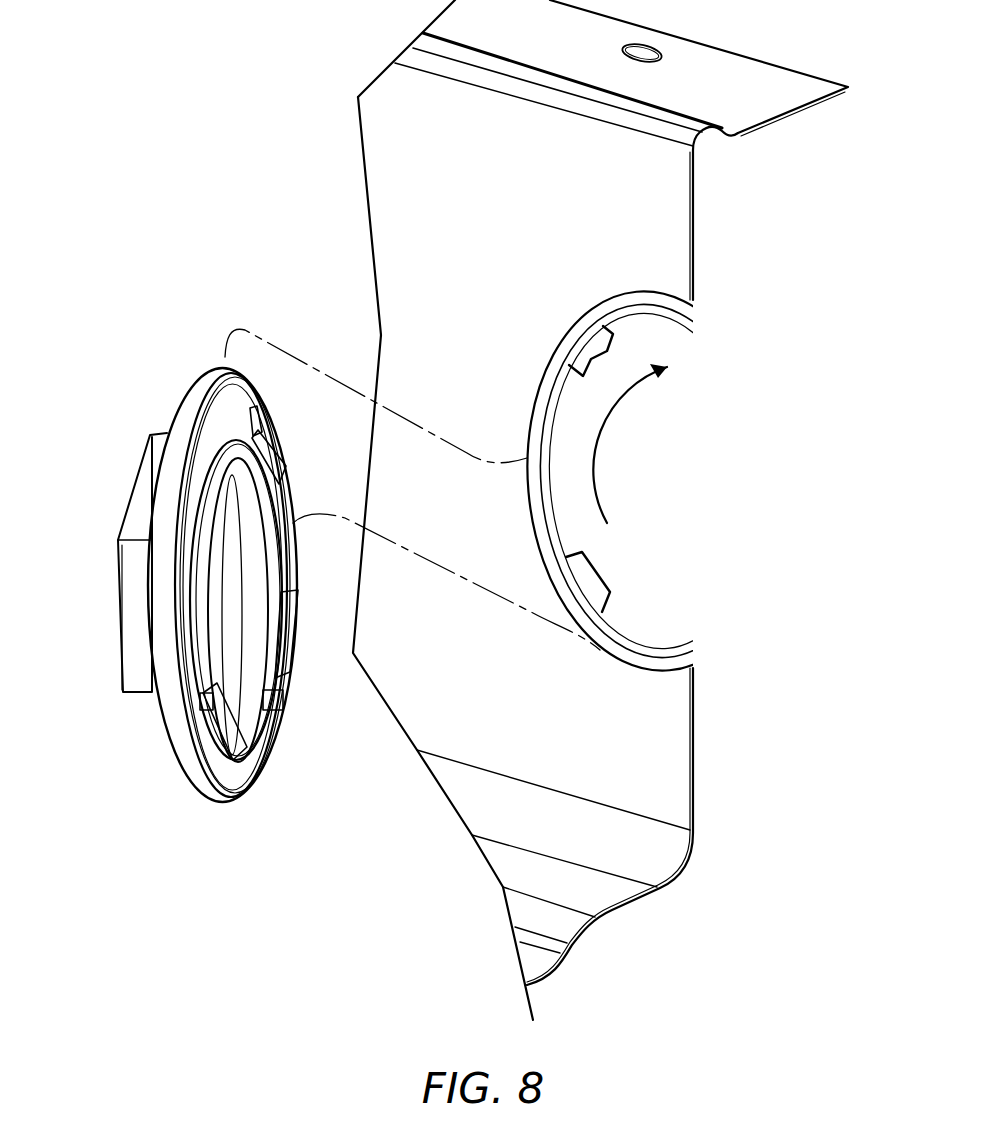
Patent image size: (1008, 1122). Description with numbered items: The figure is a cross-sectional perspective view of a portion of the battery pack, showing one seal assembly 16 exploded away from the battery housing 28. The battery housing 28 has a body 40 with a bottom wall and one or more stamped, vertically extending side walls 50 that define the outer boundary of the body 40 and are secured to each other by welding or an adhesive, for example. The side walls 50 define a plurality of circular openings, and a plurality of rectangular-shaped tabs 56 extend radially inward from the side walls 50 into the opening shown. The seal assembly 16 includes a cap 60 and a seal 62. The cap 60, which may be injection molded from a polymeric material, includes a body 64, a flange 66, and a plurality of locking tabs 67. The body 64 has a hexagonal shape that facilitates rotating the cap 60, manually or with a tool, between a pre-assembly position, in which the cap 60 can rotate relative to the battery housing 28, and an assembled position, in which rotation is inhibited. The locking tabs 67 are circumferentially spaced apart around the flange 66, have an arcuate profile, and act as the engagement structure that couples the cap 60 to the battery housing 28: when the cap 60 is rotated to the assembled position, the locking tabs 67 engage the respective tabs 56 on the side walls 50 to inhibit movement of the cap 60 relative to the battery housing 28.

The seal assembly 16 is at (139, 371).
The battery housing 28 is at (818, 268).
The body 40 is at (680, 250).
The side walls 50 is at (633, 705).
The tabs 56 is at (594, 357).
The cap 60 is at (104, 513).
The seal 62 is at (227, 403).
The body 64 is at (130, 578).
The flange 66 is at (177, 752).
The locking tabs 67 is at (287, 677).